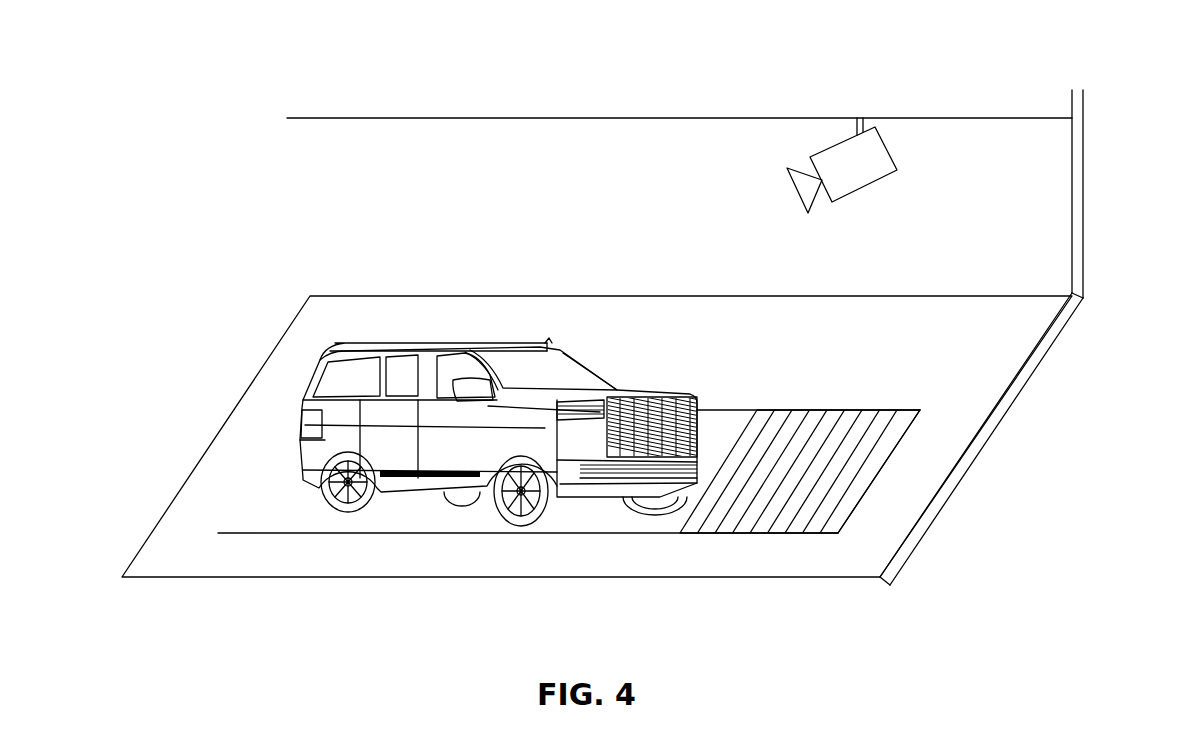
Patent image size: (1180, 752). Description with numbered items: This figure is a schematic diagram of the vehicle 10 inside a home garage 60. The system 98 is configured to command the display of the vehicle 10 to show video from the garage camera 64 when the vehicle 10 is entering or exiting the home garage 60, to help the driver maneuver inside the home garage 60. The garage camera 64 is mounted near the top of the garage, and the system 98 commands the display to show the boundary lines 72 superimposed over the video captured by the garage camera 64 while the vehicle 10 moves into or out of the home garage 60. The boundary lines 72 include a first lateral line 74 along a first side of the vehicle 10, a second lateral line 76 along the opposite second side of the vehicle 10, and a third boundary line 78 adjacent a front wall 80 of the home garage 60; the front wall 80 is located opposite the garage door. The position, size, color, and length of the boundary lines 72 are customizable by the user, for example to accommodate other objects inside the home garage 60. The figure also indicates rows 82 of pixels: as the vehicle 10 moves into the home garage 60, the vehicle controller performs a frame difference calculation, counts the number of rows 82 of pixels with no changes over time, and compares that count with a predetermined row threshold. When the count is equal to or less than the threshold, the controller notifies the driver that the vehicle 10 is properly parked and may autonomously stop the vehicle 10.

The system 98 is at (242, 192).
The home garage 60 is at (710, 102).
The garage camera 64 is at (843, 140).
The front wall 80 is at (1085, 230).
The boundary lines 72 is at (748, 535).
The first lateral line 74 is at (493, 535).
The second lateral line 76 is at (735, 410).
The rows of pixels 82 is at (827, 410).
The third boundary line 78 is at (863, 493).
The vehicle 10 is at (433, 343).